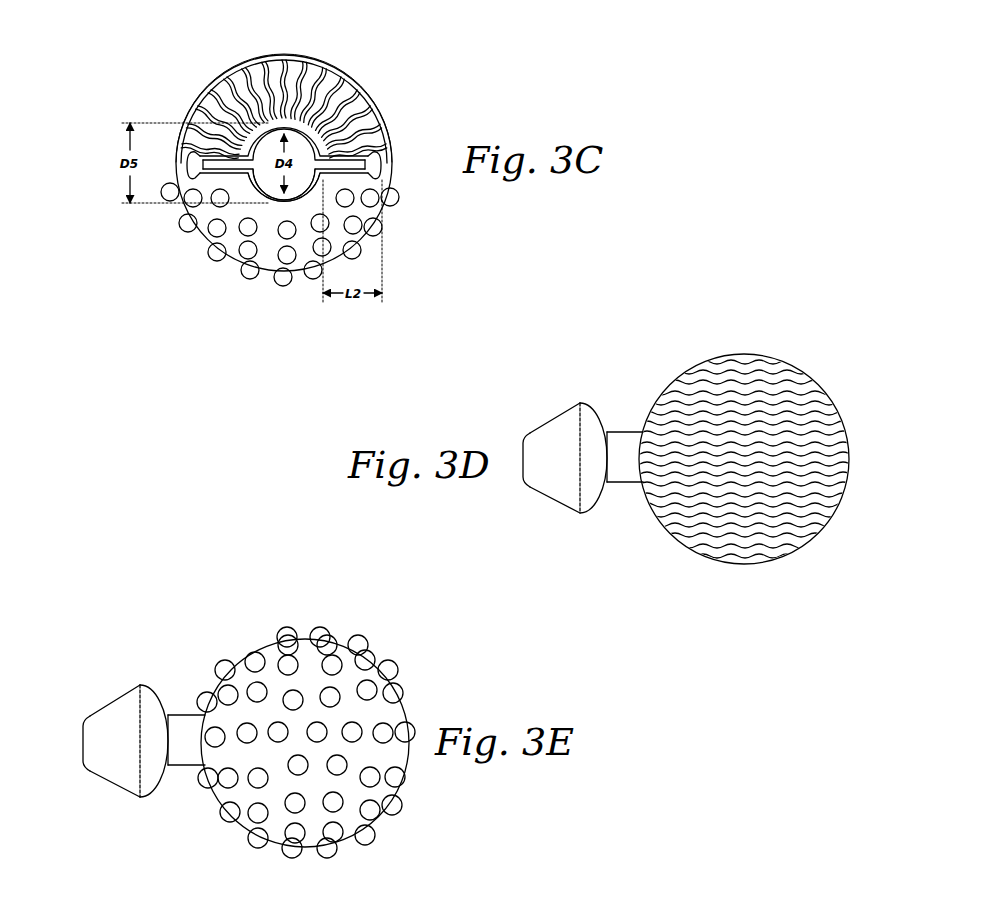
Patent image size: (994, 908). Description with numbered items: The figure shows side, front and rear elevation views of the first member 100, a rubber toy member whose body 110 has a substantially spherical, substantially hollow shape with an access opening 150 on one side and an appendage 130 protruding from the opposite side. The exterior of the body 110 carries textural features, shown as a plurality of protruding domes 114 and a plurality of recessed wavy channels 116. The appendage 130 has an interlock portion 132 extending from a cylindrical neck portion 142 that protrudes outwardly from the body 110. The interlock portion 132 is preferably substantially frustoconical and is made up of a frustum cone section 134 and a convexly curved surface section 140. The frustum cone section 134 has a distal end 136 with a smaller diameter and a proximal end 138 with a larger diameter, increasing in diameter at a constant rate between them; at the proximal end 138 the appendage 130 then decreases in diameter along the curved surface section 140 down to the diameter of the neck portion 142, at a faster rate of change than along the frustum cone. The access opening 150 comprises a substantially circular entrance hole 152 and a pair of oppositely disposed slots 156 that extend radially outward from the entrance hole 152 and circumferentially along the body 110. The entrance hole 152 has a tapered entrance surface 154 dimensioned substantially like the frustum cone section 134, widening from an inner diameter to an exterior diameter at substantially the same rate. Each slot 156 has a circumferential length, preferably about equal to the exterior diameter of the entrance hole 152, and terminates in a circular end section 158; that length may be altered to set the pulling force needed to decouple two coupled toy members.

In FIG. 3C, the first member 100 is at (392, 75).
In FIG. 3D, the first member 100 is at (850, 367).
In FIG. 3E, the first member 100 is at (202, 632).
In FIG. 3C, the body 110 is at (288, 127).
In FIG. 3D, the body 110 is at (717, 355).
In FIG. 3E, the body 110 is at (342, 638).
In FIG. 3C, the protruding domes 114 is at (318, 248).
In FIG. 3E, the protruding domes 114 is at (292, 643).
In FIG. 3C, the recessed wavy channels 116 is at (367, 93).
In FIG. 3D, the recessed wavy channels 116 is at (787, 400).
In FIG. 3D, the appendage 130 is at (567, 400).
In FIG. 3E, the appendage 130 is at (125, 683).
In FIG. 3D, the interlock portion 132 is at (540, 497).
In FIG. 3E, the interlock portion 132 is at (100, 783).
In FIG. 3D, the frustum cone section 134 is at (562, 487).
In FIG. 3E, the frustum cone section 134 is at (123, 768).
In FIG. 3D, the distal end 136 is at (521, 452).
In FIG. 3E, the distal end 136 is at (83, 733).
In FIG. 3D, the proximal end 138 is at (579, 402).
In FIG. 3E, the proximal end 138 is at (140, 685).
In FIG. 3D, the convexly curved surface section 140 is at (605, 487).
In FIG. 3E, the convexly curved surface section 140 is at (165, 783).
In FIG. 3D, the cylindrical neck portion 142 is at (628, 487).
In FIG. 3E, the cylindrical neck portion 142 is at (190, 768).
In FIG. 3C, the access opening 150 is at (281, 203).
In FIG. 3C, the entrance hole 152 is at (253, 182).
In FIG. 3C, the tapered entrance surface 154 is at (242, 58).
In FIG. 3C, the slots 156 is at (198, 98).
In FIG. 3C, the circular end section 158 is at (397, 162).